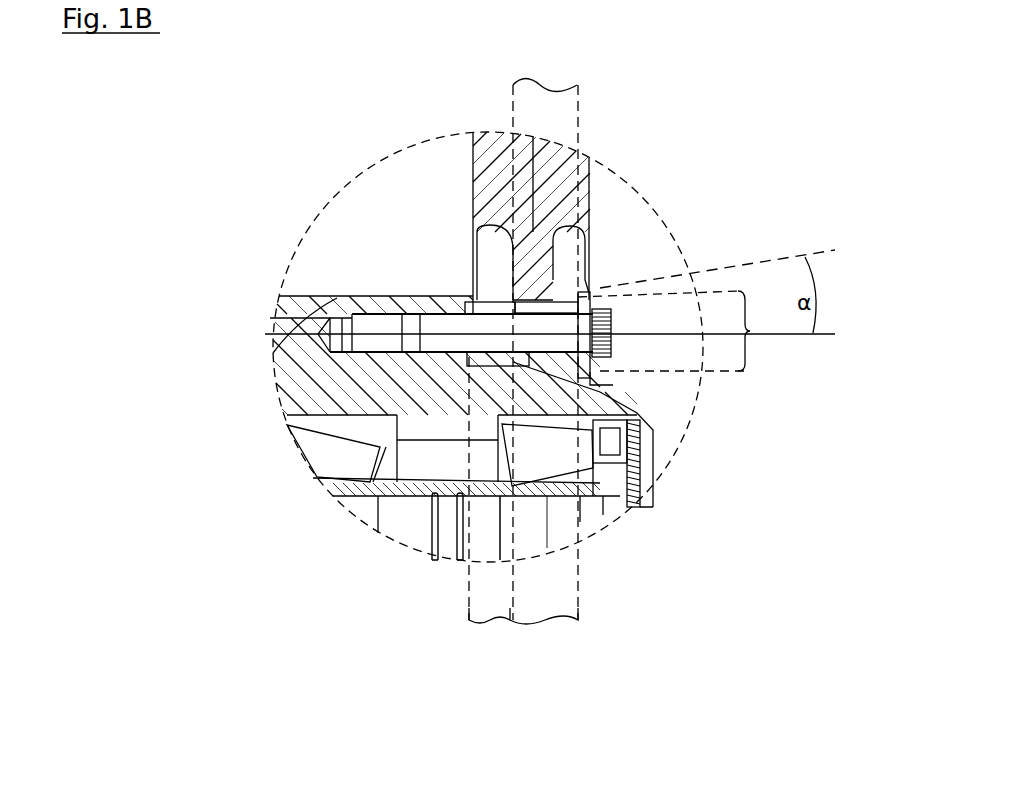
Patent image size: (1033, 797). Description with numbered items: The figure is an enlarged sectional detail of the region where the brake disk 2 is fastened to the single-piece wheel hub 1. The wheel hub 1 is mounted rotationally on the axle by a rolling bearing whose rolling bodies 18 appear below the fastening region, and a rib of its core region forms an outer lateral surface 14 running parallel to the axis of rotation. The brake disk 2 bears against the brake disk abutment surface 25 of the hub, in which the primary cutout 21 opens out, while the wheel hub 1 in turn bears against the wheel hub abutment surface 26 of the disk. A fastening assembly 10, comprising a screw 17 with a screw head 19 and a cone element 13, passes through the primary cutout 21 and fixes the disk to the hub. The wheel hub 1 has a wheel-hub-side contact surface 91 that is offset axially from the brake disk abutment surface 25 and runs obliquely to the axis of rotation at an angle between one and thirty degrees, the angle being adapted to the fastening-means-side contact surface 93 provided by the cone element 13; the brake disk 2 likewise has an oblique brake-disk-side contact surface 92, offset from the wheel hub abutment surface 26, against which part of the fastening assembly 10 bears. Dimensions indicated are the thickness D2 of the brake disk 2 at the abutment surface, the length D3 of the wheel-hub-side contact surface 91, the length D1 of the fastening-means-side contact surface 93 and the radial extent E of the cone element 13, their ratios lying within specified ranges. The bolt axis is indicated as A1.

The wheel hub 1 is at (283, 366).
The brake disk 2 is at (594, 185).
The fastening assembly 10 is at (624, 326).
The cone element 13 is at (584, 295).
The outer lateral surface 14 is at (353, 292).
The screw 17 is at (285, 318).
The rolling body 18 is at (650, 473).
The screw head 19 is at (613, 357).
The primary cutout 21 is at (335, 359).
The brake disk abutment surface 25 is at (395, 245).
The wheel hub abutment surface 26 is at (471, 302).
The wheel-hub-side contact surface 91 is at (585, 494).
The brake-disk-side contact surface 92 is at (553, 292).
The fastening-means-side contact surface 93 is at (527, 364).
The axis A1 is at (487, 368).
The length of the fastening-means-side contact surface D1 is at (545, 338).
The thickness of the brake disk in the region of the brake disk abutment surface D2 is at (489, 513).
The length of the wheel-hub-side contact surface D3 is at (544, 639).
The radial extent of the cone element E is at (671, 331).